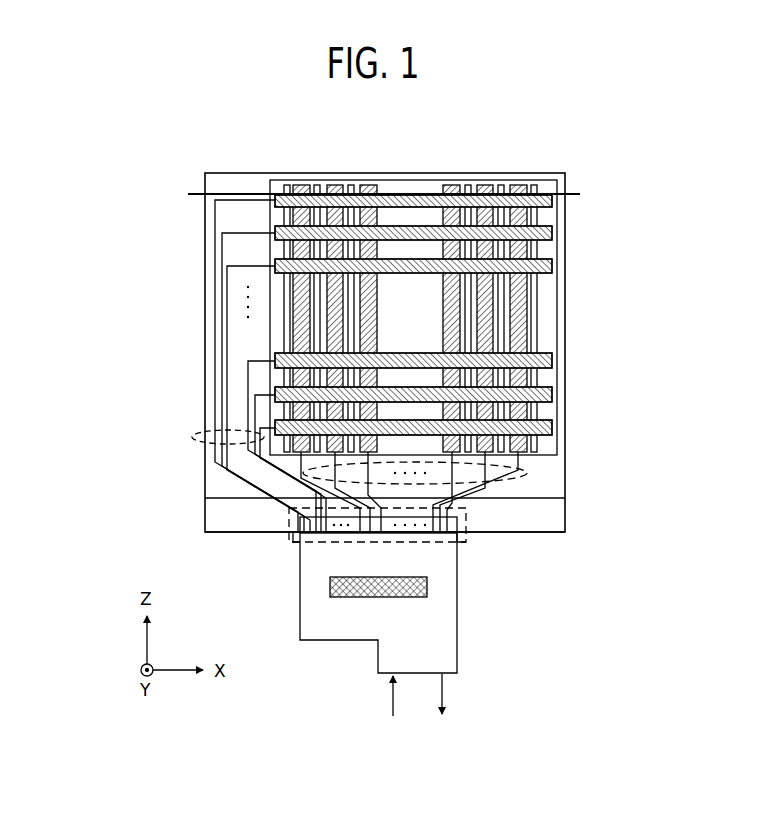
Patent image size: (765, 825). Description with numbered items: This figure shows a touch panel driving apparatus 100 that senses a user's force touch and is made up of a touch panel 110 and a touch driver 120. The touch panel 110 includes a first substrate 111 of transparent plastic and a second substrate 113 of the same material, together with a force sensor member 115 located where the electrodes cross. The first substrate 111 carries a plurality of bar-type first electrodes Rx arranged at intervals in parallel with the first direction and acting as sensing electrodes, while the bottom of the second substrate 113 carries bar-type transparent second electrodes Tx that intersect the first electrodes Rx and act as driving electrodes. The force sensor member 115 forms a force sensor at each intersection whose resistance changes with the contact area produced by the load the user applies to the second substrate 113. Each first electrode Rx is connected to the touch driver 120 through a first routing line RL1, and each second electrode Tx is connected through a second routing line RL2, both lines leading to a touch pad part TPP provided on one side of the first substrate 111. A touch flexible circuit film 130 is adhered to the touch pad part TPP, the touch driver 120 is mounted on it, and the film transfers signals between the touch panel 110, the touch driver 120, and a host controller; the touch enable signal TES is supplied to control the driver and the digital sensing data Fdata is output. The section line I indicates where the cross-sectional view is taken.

The touch panel driving apparatus 100 is at (110, 155).
The touch panel 110 is at (565, 173).
The first substrate 111 is at (205, 521).
The second substrate 113 is at (205, 497).
The force sensor member 115 is at (553, 285).
The touch driver 120 is at (429, 587).
The touch flexible circuit film 130 is at (441, 639).
The first electrodes Rx is at (530, 317).
The second electrodes Tx is at (556, 355).
The first routing line RL1 is at (524, 474).
The second routing line RL2 is at (194, 437).
The touch pad part TPP is at (292, 545).
The touch enable signal TES is at (391, 712).
The digital sensing data Fdata is at (448, 711).
The line I-I' I is at (384, 196).